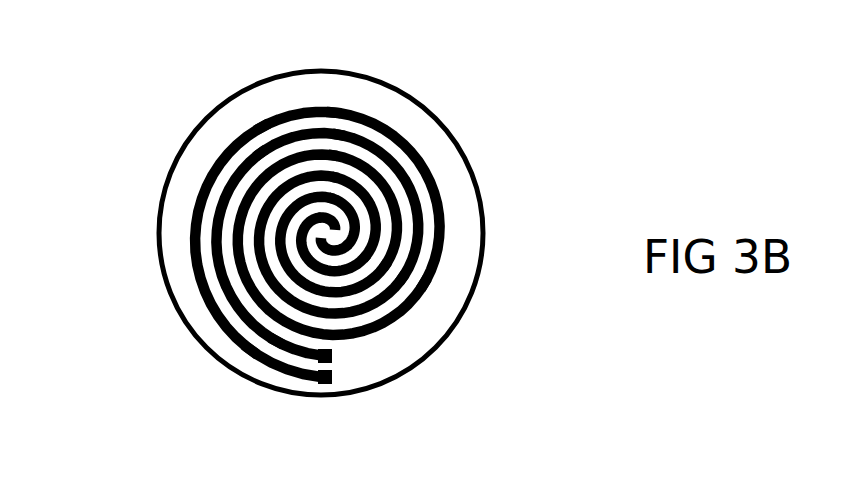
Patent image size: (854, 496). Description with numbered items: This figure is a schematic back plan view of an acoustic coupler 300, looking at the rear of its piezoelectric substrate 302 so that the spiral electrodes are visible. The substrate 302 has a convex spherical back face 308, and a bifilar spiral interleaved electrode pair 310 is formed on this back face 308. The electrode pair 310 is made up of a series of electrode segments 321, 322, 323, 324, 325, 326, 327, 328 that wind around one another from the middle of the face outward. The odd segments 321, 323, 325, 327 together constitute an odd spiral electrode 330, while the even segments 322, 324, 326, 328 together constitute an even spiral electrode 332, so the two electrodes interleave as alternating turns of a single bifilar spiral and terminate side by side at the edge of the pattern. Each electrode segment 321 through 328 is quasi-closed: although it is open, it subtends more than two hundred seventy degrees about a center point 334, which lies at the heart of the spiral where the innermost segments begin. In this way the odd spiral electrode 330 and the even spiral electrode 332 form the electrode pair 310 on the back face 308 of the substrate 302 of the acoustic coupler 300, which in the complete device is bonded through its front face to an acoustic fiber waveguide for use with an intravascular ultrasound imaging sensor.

The acoustic coupler 300 is at (193, 110).
The piezoelectric substrate 302 is at (168, 172).
The convex spherical back face 308 is at (408, 115).
The bifilar spiral interleaved electrode pair 310 is at (241, 110).
The electrode segment 321 is at (333, 222).
The electrode segment 322 is at (355, 224).
The electrode segment 323 is at (378, 218).
The electrode segment 324 is at (385, 230).
The electrode segment 325 is at (403, 247).
The electrode segment 326 is at (410, 263).
The electrode segment 327 is at (418, 272).
The electrode segment 328 is at (425, 298).
The odd spiral electrode 330 is at (333, 352).
The even spiral electrode 332 is at (305, 381).
The center point 334 is at (315, 229).